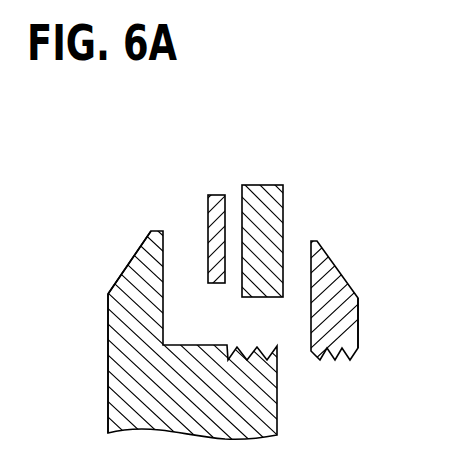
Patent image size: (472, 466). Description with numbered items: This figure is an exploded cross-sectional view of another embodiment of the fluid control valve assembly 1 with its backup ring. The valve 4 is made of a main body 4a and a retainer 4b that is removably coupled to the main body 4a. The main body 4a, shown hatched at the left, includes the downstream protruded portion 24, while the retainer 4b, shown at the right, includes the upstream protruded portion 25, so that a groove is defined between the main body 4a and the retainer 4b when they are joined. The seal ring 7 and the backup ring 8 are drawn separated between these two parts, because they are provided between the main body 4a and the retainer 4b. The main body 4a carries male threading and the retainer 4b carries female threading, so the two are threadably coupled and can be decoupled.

The valve assembly 1 is at (378, 172).
The valve 4 is at (109, 397).
The main body 4a is at (120, 313).
The retainer 4b is at (335, 283).
The seal ring 7 is at (270, 187).
The backup ring 8 is at (213, 195).
The downstream protruded portion 24 is at (137, 276).
The upstream protruded portion 25 is at (357, 310).